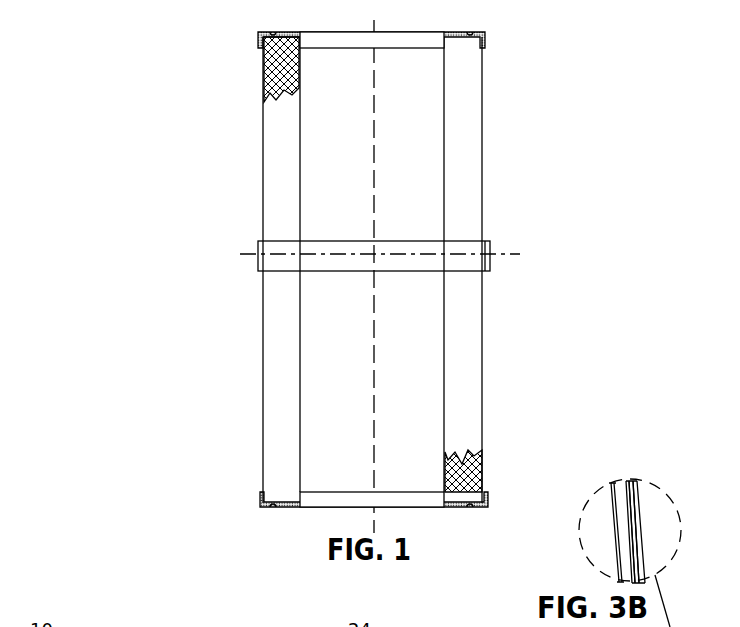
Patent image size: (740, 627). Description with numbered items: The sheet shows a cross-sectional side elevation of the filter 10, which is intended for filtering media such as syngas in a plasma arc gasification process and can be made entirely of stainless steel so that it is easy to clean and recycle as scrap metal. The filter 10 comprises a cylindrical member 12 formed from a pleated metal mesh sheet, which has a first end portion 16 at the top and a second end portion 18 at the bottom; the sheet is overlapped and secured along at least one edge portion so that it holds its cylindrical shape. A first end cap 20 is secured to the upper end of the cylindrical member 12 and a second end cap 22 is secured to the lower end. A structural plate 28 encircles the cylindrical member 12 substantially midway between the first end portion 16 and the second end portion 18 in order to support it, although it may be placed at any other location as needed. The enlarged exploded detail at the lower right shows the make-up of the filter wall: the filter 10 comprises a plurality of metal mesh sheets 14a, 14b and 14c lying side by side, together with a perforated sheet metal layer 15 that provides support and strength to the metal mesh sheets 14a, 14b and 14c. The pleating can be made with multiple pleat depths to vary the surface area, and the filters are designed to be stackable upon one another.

In FIG. 1, the filter 10 is at (103, 71).
In FIG. 1, the cylindrical member 12 is at (275, 173).
In FIG. 3B, the metal mesh sheet 14a is at (646, 548).
In FIG. 3B, the metal mesh sheet 14b is at (639, 524).
In FIG. 3B, the metal mesh sheet 14c is at (631, 509).
In FIG. 3B, the perforated sheet metal layer 15 is at (610, 527).
In FIG. 1, the first end portion 16 is at (263, 66).
In FIG. 1, the second end portion 18 is at (282, 407).
In FIG. 1, the first end cap 20 is at (258, 34).
In FIG. 1, the second end cap 22 is at (262, 503).
In FIG. 1, the structural plate 28 is at (497, 247).